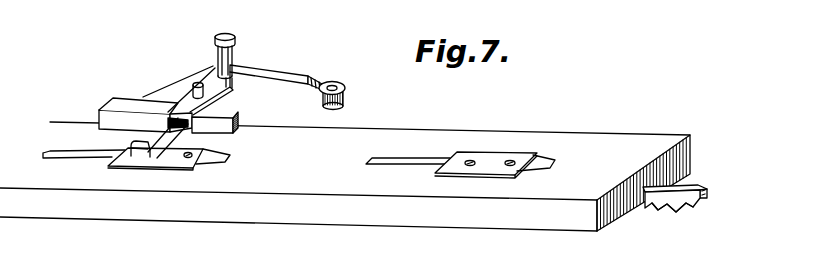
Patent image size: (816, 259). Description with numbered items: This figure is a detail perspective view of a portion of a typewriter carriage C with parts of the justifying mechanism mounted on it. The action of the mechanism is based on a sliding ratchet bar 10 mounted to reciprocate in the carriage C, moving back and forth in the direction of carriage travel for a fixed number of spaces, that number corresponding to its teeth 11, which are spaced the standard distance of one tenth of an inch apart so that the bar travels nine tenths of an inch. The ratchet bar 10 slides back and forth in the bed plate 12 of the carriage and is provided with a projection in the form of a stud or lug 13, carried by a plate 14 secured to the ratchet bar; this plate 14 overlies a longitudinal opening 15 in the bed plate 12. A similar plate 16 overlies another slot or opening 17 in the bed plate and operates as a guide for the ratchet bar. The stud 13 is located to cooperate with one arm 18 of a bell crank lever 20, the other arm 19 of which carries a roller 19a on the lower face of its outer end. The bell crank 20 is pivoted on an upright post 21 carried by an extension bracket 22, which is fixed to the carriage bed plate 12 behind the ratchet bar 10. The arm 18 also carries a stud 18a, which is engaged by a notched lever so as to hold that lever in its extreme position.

The sliding ratchet bar 10 is at (685, 181).
The teeth 11 is at (688, 209).
The bed plate 12 is at (585, 134).
The carriage C is at (365, 171).
The stud or lug 13 is at (138, 157).
The plate 14 is at (200, 146).
The longitudinal opening 15 is at (225, 159).
The plate 16 is at (492, 154).
The slot or opening 17 is at (553, 161).
The arm 18 is at (170, 143).
The stud 18a is at (195, 86).
The arm 19 is at (295, 73).
The roller 19a is at (347, 98).
The bell crank lever 20 is at (266, 73).
The upright post 21 is at (237, 52).
The extension bracket 22 is at (127, 105).